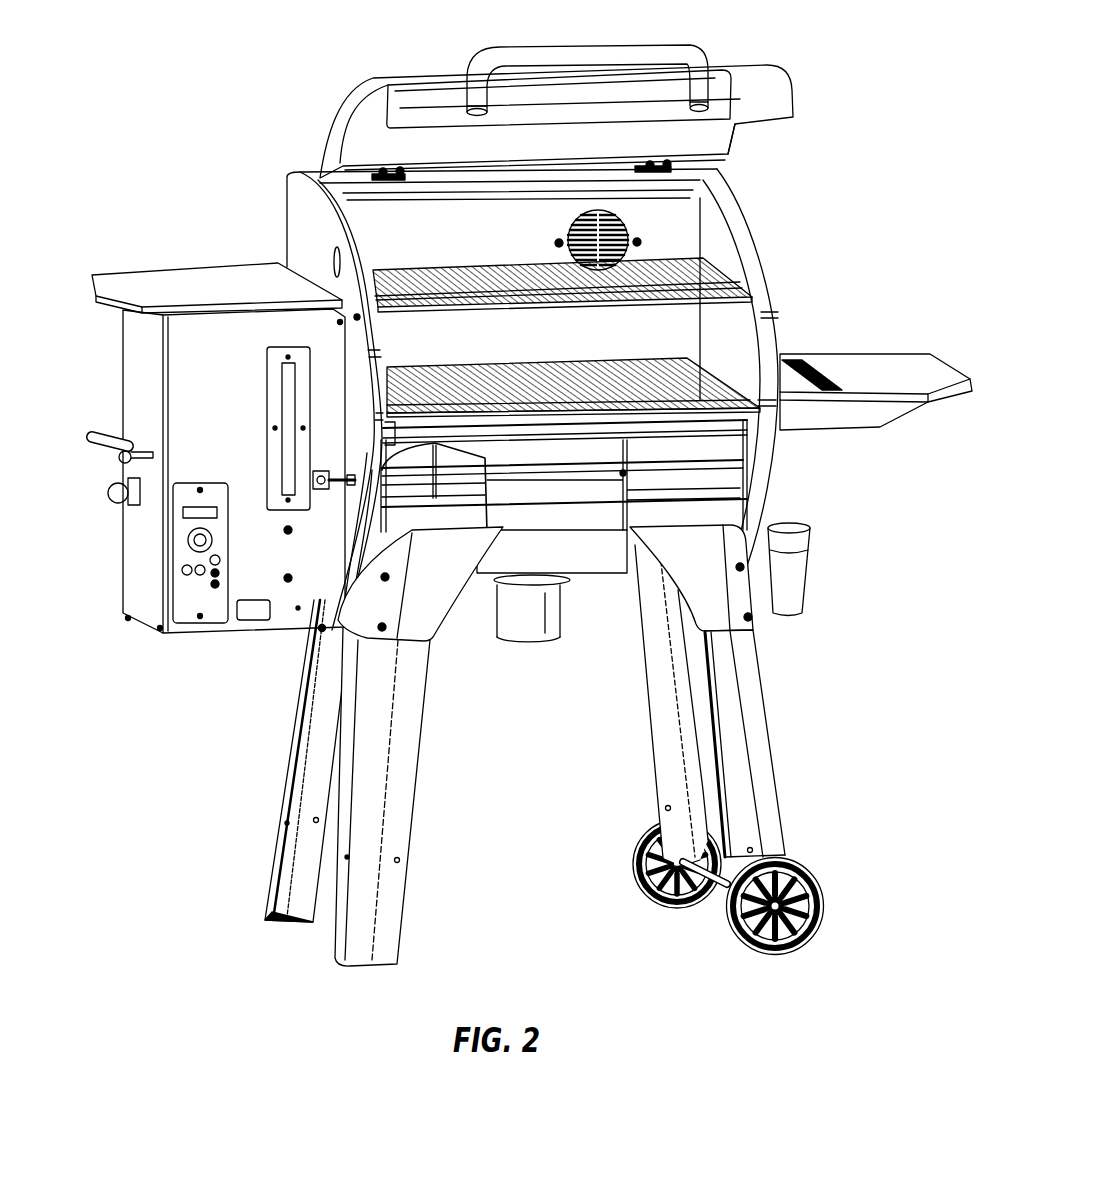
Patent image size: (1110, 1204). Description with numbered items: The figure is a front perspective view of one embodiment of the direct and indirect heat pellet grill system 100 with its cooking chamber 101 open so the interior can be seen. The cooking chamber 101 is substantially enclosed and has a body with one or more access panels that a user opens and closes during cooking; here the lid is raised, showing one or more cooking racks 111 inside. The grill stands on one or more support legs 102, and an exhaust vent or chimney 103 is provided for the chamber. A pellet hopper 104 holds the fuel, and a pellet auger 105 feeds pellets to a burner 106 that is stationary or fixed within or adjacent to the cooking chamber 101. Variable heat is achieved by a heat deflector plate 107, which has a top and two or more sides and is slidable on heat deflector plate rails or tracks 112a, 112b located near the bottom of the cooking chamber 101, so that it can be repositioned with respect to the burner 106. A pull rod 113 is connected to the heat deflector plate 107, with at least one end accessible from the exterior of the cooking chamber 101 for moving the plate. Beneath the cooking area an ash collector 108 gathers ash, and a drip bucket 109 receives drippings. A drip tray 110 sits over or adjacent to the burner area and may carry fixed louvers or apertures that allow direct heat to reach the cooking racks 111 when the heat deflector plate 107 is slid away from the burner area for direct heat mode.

The pellet grill system 100 is at (897, 74).
The cooking chamber 101 is at (760, 182).
The support legs 102 is at (377, 728).
The exhaust vent and/or chimney 103 is at (608, 72).
The pellet hopper 104 is at (135, 350).
The pellet auger 105 is at (420, 524).
The burner 106 is at (733, 635).
The heat deflector plate 107 is at (705, 612).
The ash collector 108 is at (517, 607).
The drip bucket 109 is at (795, 570).
The drip tray 110 is at (757, 375).
The cooking racks 111 is at (700, 402).
The heat deflector plate rail or track 112a is at (750, 463).
The heat deflector plate rail or track 112b is at (342, 585).
The pull rod 113 is at (313, 483).